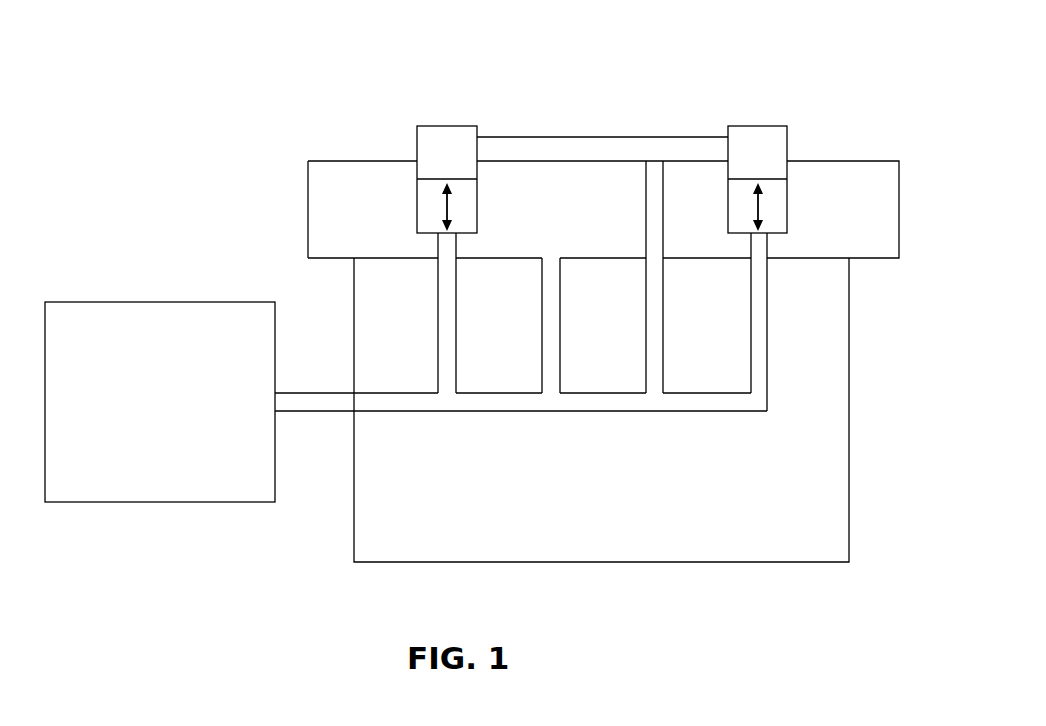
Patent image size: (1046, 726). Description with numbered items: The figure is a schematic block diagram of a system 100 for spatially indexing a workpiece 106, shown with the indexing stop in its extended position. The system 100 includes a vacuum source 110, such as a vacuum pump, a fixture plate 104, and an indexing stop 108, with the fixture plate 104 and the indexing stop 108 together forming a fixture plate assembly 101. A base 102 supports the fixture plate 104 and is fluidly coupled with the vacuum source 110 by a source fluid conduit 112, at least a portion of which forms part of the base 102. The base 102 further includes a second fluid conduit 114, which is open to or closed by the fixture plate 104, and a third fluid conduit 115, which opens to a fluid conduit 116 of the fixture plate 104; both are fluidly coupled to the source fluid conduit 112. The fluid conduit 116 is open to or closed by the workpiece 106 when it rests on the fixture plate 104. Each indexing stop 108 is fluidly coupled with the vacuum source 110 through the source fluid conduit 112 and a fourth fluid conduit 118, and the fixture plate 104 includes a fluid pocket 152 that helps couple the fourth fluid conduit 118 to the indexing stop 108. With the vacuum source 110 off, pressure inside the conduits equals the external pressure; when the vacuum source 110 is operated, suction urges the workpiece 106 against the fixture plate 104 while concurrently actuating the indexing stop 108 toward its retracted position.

The system 100 is at (841, 79).
The fixture plate assembly 101 is at (887, 151).
The base 102 is at (849, 433).
The fixture plate 104 is at (899, 207).
The workpiece 106 is at (575, 137).
The indexing stop 108 is at (442, 144).
The vacuum source 110 is at (175, 445).
The source fluid conduit 112 is at (321, 405).
The second fluid conduit 114 is at (555, 320).
The third fluid conduit 115 is at (661, 341).
The fluid conduit 116 is at (662, 219).
The fourth fluid conduit 118 is at (447, 322).
The fluid pocket 152 is at (452, 247).